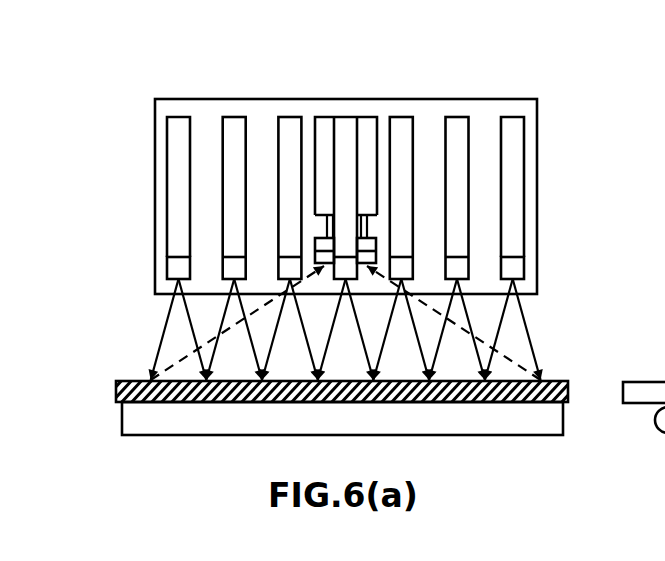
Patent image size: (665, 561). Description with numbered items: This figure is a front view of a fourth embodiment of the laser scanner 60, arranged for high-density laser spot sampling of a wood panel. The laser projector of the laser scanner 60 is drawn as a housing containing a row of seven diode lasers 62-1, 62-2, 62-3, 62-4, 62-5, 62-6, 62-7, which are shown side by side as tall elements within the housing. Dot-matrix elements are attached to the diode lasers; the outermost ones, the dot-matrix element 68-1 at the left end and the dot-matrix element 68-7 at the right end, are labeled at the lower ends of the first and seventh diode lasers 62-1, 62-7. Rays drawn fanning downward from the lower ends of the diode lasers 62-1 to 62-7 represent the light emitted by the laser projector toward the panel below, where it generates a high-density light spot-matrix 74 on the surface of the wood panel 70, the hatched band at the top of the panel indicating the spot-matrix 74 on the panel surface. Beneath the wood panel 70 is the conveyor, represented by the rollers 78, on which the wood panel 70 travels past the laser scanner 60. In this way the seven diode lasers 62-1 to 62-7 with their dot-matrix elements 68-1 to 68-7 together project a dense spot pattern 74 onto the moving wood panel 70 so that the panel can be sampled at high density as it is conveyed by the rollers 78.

The laser scanner 60 is at (537, 129).
The diode laser 62-1 is at (178, 117).
The diode laser 62-2 is at (234, 117).
The diode laser 62-3 is at (290, 117).
The diode laser 62-4 is at (346, 117).
The diode laser 62-5 is at (401, 117).
The diode laser 62-6 is at (457, 117).
The diode laser 62-7 is at (513, 117).
The dot-matrix element 68-1 is at (176, 267).
The dot-matrix element 68-7 is at (515, 268).
The wood panel 70 is at (365, 417).
The high-density light spot-matrix 74 is at (533, 381).
The rollers 78 is at (542, 410).